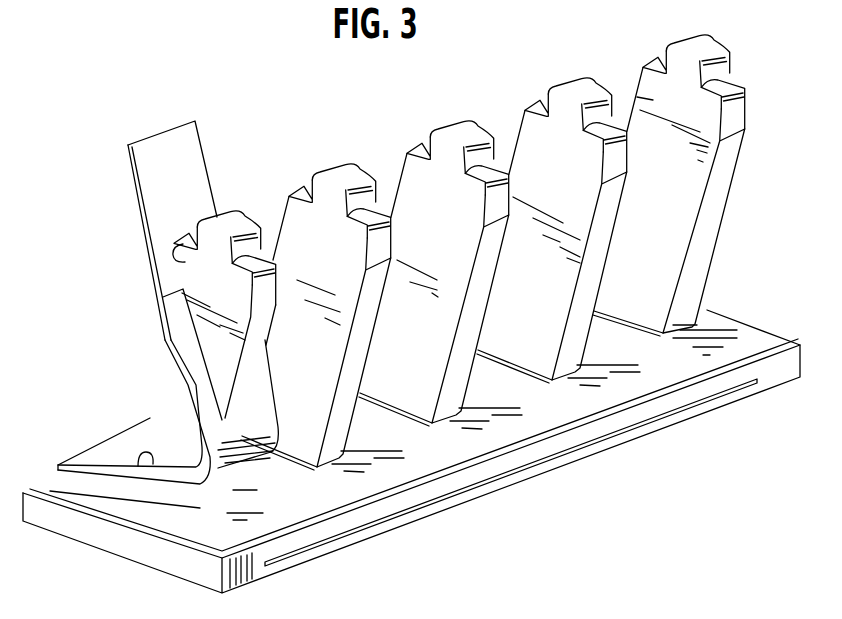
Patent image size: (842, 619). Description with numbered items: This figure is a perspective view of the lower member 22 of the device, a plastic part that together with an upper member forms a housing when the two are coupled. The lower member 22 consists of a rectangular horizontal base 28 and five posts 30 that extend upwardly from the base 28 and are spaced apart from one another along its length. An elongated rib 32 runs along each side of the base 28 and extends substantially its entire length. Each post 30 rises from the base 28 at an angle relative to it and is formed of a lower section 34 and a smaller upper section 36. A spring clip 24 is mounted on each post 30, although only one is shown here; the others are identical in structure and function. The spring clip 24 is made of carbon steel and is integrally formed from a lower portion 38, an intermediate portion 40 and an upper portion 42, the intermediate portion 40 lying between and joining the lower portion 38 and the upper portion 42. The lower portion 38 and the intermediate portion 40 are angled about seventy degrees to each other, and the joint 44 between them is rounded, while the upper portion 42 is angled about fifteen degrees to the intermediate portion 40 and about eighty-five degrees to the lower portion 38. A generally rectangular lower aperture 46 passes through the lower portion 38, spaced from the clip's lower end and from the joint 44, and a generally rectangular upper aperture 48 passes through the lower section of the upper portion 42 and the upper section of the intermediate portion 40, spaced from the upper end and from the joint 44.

The lower member 22 is at (448, 240).
The spring clip 24 is at (177, 347).
The horizontal base 28 is at (411, 451).
The post 30 is at (431, 240).
The elongated rib 32 is at (540, 463).
The lower section 34 is at (694, 182).
The upper section 36 is at (680, 55).
The lower portion 38 is at (99, 499).
The intermediate portion 40 is at (182, 342).
The upper portion 42 is at (148, 181).
The joint 44 is at (253, 458).
The lower aperture 46 is at (147, 456).
The upper aperture 48 is at (180, 264).